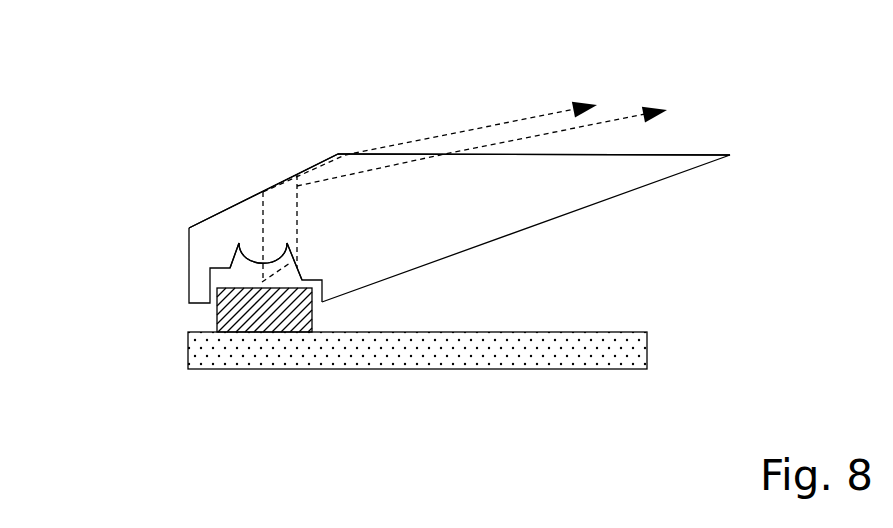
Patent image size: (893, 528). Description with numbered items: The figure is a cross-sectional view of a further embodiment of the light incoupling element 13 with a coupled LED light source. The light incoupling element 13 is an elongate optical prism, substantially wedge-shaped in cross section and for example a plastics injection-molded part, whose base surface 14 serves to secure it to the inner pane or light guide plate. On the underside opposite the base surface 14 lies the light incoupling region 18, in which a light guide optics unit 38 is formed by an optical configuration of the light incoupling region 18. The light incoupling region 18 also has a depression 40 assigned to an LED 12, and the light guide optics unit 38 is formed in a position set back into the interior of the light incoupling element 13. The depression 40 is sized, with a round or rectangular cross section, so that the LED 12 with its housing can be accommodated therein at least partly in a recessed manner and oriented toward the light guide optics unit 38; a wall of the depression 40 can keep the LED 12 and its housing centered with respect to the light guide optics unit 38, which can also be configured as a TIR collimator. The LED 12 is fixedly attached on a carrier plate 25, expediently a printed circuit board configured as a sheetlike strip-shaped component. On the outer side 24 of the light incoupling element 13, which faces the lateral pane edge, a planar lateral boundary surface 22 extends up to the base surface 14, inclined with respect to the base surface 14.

The LED 12 is at (217, 310).
The light incoupling element 13 is at (375, 200).
The base surface 14 is at (672, 155).
The light incoupling region 18 is at (322, 257).
The lateral boundary surface 22 is at (308, 158).
The outer side 24 is at (150, 257).
The carrier plate 25 is at (508, 347).
The light guide optics unit 38 is at (259, 255).
The depression 40 is at (243, 277).